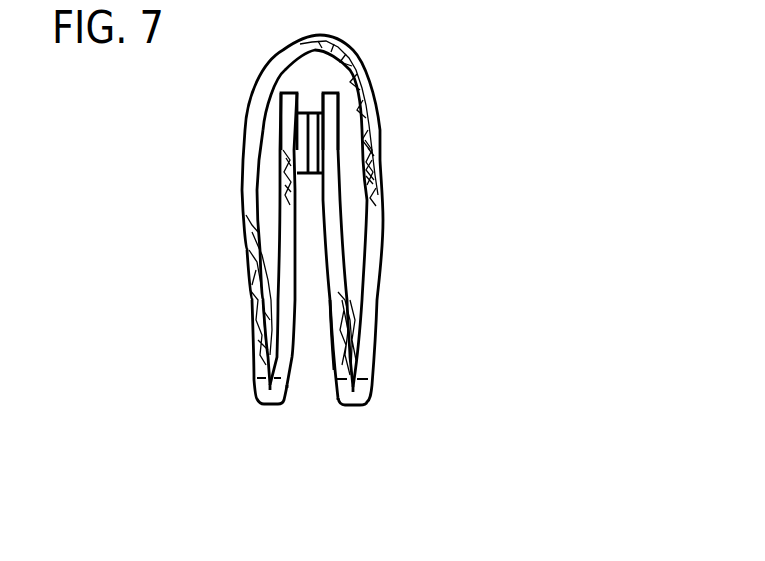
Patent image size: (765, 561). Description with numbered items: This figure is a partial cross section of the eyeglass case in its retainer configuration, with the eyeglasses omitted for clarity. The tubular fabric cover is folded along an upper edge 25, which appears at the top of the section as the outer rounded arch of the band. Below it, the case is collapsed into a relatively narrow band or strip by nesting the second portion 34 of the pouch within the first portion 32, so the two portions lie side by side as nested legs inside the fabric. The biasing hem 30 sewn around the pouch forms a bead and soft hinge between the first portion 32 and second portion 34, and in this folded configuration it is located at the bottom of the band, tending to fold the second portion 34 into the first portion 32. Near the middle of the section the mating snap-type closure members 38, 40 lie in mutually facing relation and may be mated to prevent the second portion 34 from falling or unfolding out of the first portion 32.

The upper edge 25 is at (312, 38).
The biasing hem 30 is at (338, 386).
The first portion 32 is at (414, 184).
The second portion 34 is at (337, 245).
The closure member 38 is at (317, 123).
The closure member 40 is at (303, 130).